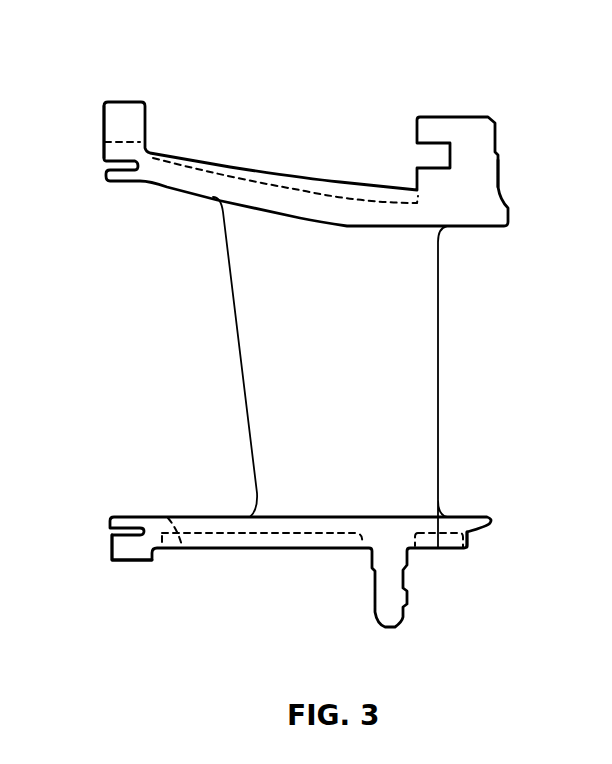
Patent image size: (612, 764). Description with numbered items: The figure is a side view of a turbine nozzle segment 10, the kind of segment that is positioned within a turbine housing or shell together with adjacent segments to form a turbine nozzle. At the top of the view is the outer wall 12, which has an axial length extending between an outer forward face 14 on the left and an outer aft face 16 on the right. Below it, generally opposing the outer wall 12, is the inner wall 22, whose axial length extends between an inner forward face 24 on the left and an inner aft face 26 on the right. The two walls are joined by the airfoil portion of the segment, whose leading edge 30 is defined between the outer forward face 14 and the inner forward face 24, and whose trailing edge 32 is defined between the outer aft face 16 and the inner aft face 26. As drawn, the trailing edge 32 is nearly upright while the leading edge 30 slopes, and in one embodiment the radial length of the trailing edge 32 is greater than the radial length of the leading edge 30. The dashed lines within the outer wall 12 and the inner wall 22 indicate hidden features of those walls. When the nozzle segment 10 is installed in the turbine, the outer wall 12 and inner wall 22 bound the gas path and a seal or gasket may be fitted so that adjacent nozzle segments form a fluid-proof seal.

The nozzle segment 10 is at (100, 48).
The outer wall 12 is at (480, 137).
The outer forward face 14 is at (103, 128).
The outer aft face 16 is at (498, 183).
The inner wall 22 is at (264, 538).
The inner forward face 24 is at (110, 547).
The inner aft face 26 is at (483, 528).
The leading edge 30 is at (243, 387).
The trailing edge 32 is at (438, 397).